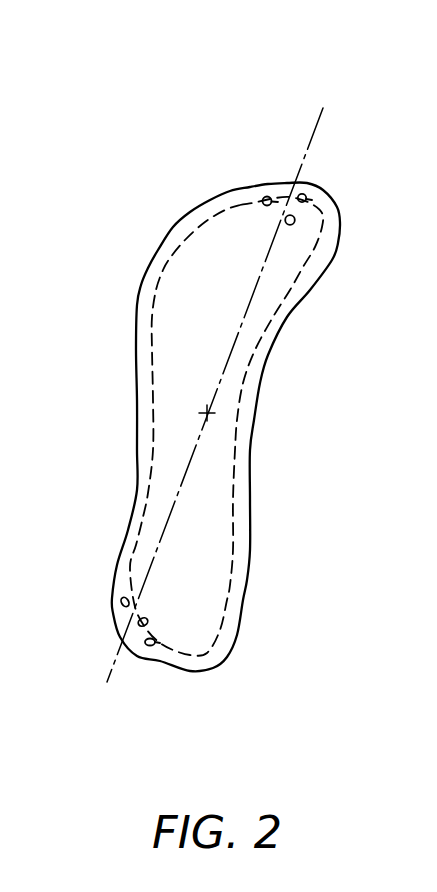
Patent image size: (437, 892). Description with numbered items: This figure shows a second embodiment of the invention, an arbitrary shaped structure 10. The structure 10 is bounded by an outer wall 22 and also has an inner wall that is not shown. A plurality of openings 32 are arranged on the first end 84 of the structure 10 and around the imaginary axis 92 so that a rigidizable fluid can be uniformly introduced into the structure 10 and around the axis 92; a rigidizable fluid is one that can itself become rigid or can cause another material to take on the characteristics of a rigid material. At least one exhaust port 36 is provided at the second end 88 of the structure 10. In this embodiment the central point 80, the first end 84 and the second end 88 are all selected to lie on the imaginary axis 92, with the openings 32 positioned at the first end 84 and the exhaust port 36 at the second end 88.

The structure 10 is at (305, 412).
The outer wall 22 is at (257, 557).
The second end 88 is at (260, 180).
The axis 92 is at (312, 130).
The central point 80 is at (197, 407).
The exhaust port 36 is at (305, 195).
The openings 32 is at (152, 650).
The first end 84 is at (220, 671).